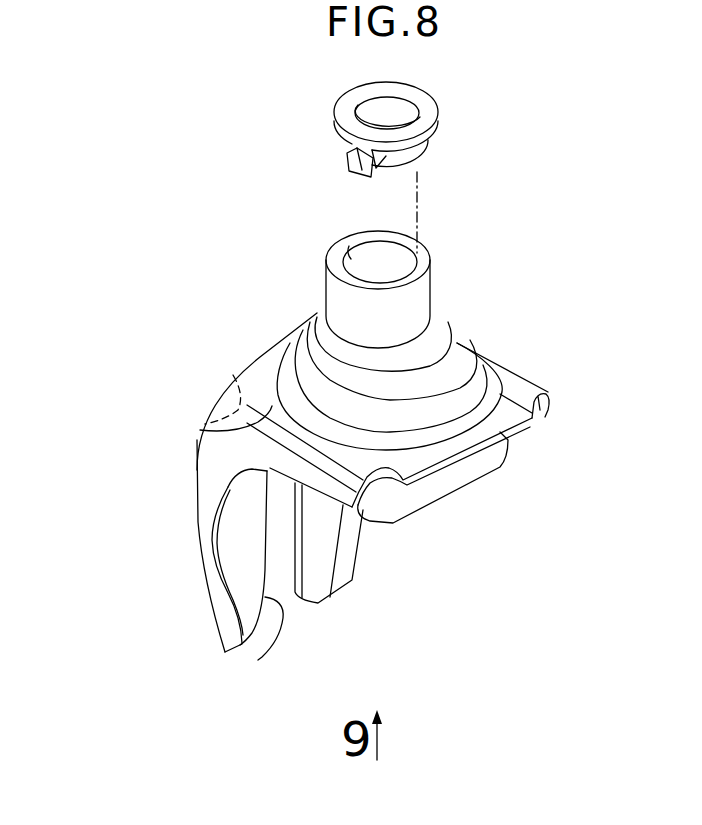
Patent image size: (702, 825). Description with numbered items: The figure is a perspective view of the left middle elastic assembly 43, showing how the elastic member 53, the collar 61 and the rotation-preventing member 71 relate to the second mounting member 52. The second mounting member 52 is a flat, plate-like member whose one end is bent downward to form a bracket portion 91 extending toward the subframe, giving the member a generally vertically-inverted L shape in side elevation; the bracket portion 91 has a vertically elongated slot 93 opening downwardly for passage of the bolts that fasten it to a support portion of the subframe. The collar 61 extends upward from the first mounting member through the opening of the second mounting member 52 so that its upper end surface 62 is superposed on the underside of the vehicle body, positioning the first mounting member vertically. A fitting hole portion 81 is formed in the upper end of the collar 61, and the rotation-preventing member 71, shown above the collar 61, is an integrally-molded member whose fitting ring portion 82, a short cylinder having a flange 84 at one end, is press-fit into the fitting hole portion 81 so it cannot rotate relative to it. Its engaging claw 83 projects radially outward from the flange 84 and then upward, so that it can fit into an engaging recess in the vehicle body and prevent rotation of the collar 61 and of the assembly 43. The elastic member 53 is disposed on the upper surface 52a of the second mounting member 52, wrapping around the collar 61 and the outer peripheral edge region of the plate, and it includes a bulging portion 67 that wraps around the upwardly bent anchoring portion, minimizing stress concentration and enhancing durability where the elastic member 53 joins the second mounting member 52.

The left middle elastic assembly 43 is at (135, 228).
The rotation-preventing member 71 is at (340, 97).
The flange 84 is at (438, 118).
The fitting ring portion 82 is at (425, 152).
The engaging claw 83 is at (347, 160).
The fitting hole portion 81 is at (352, 257).
The collar 61 is at (323, 285).
The upper end surface 62 is at (428, 258).
The elastic member 53 is at (293, 317).
The bulging portion 67 is at (463, 378).
The second mounting member 52 is at (262, 374).
The upper surface 52a is at (202, 430).
The bracket portion 91 is at (208, 583).
The vertically elongated slot 93 is at (258, 660).